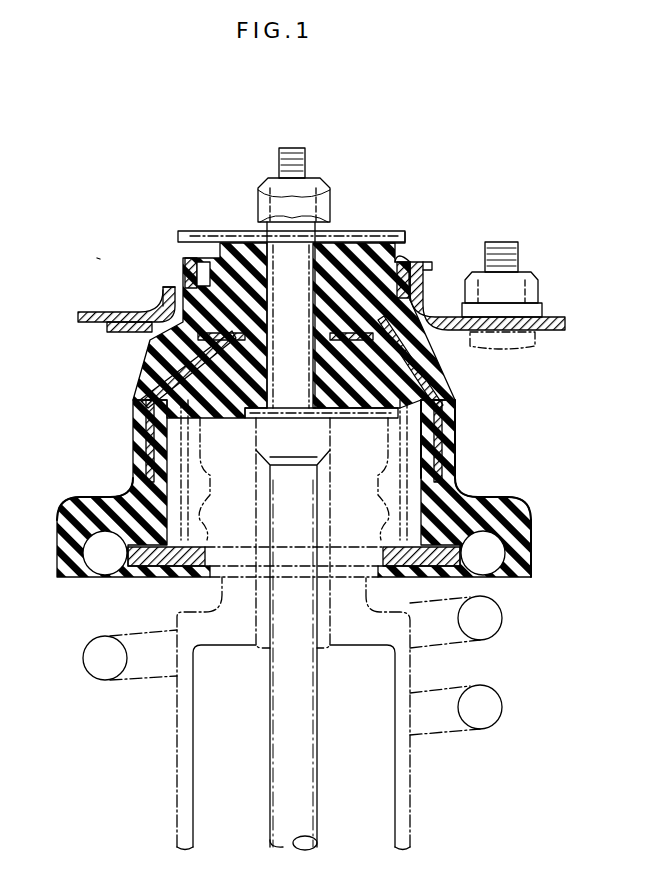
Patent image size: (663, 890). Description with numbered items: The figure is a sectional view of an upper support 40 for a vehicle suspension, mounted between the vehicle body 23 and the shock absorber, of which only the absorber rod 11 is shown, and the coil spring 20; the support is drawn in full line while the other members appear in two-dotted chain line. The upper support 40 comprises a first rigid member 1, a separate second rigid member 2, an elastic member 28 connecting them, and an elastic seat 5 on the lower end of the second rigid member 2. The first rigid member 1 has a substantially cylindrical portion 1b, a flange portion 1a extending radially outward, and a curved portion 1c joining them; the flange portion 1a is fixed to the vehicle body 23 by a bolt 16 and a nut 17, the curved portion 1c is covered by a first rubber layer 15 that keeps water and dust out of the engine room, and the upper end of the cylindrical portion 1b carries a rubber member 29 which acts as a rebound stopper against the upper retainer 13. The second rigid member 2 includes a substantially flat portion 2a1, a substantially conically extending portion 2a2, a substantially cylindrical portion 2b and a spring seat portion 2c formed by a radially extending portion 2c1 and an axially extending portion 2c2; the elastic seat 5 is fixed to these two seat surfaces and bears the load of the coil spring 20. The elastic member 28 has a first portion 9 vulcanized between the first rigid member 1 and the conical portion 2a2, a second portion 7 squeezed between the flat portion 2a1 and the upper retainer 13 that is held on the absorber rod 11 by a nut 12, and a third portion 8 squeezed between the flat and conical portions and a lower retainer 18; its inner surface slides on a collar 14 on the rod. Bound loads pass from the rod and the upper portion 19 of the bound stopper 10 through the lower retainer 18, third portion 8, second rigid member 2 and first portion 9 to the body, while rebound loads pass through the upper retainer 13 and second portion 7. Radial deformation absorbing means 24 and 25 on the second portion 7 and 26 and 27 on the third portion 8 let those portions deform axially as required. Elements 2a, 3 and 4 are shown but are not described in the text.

The upper support 40 is at (97, 258).
The first rigid member 1 is at (102, 318).
The flange portion 1a is at (127, 331).
The substantially cylindrical portion 1b is at (176, 280).
The curved portion 1c is at (152, 318).
The second rigid member 2 is at (150, 440).
The second bracket plate 2a is at (458, 372).
The substantially flat portion 2a1 is at (425, 343).
The substantially conically extending portion 2a2 is at (455, 393).
The substantially cylindrical portion 2b is at (446, 456).
The spring seat portion 2c is at (500, 508).
The radially extending portion 2c1 is at (480, 497).
The axially extending portion 2c2 is at (518, 540).
The inner liner 3 is at (158, 458).
The elastic cushion 4 is at (77, 507).
The elastic seat 5 is at (60, 546).
The second portion 7 is at (213, 240).
The third portion 8 is at (197, 410).
The first portion 9 is at (148, 386).
The bound stopper 10 is at (183, 732).
The absorber rod 11 is at (310, 744).
The nut 12 is at (317, 197).
The upper retainer 13 is at (378, 242).
The collar 14 is at (317, 243).
The first rubber layer 15 is at (420, 270).
The bolt 16 is at (515, 250).
The nut 17 is at (535, 292).
The lower retainer 18 is at (448, 420).
The upper portion 19 is at (352, 506).
The coil spring 20 is at (505, 622).
The vehicle body 23 is at (432, 312).
The first radial deformation absorbing means 24 is at (249, 248).
The second radial deformation absorbing means 25 is at (192, 262).
The third radial deformation absorbing means 26 is at (243, 414).
The fourth radial deformation absorbing means 27 is at (203, 520).
The elastic member 28 is at (160, 350).
The rubber member 29 is at (400, 262).